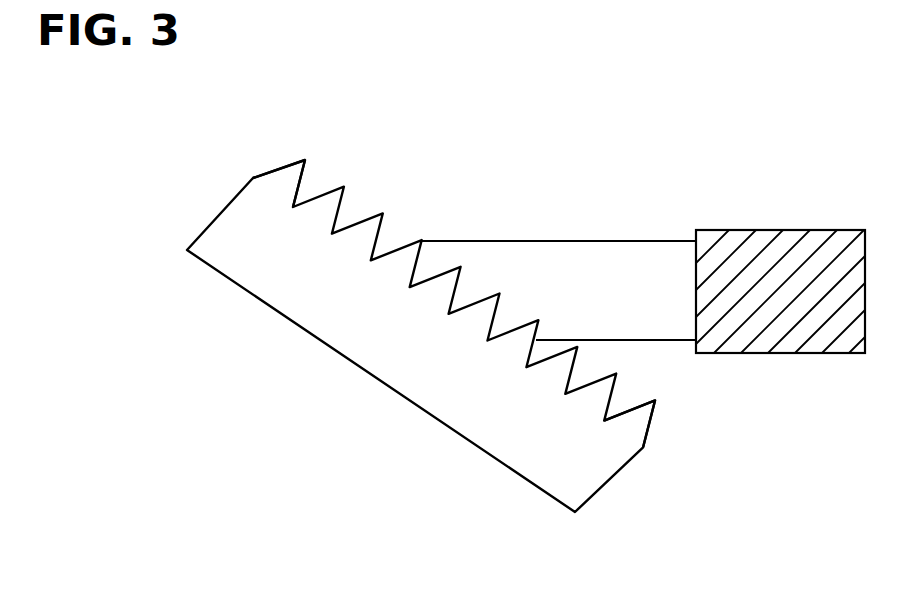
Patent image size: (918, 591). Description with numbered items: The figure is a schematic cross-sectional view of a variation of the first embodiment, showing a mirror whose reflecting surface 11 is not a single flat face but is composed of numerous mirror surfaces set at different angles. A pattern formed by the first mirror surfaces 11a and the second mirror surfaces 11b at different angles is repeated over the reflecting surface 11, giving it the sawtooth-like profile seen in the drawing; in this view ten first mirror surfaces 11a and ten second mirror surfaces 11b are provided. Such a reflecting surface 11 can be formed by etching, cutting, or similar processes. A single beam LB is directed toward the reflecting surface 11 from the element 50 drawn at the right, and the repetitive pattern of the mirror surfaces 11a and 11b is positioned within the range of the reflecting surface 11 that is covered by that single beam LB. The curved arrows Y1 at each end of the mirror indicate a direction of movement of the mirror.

The reflecting surface 11 is at (365, 200).
The first mirror surface 11a is at (312, 177).
The second mirror surface 11b is at (268, 168).
The light source 50 is at (780, 250).
The beam LB is at (638, 262).
The rotation direction Y1 is at (228, 130).